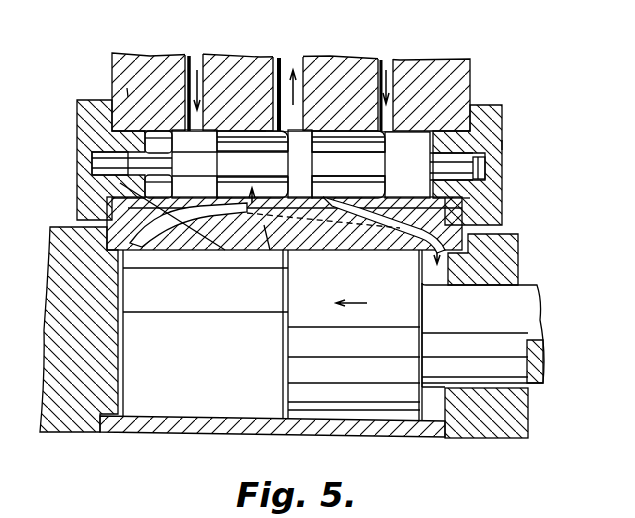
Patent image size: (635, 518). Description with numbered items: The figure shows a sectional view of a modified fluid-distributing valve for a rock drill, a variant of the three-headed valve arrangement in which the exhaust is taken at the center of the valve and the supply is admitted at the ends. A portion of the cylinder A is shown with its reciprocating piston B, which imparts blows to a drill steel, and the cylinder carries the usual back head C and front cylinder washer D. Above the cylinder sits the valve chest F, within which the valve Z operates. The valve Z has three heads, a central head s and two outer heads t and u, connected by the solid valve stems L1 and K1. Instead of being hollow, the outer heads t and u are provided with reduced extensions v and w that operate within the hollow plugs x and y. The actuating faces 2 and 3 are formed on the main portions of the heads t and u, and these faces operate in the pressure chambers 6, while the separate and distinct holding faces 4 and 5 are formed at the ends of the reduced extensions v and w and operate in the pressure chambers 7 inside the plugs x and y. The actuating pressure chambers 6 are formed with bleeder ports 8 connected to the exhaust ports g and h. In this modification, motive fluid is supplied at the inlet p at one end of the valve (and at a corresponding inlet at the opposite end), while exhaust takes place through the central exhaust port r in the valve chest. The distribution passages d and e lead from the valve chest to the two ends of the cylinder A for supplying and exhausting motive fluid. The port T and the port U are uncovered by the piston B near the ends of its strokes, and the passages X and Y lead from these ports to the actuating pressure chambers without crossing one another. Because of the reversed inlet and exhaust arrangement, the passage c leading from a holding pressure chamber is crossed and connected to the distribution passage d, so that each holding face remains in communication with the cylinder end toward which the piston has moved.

The valve chest F is at (430, 72).
The inlet port p is at (198, 67).
The exhaust port r is at (300, 67).
The exhaust port g is at (384, 67).
The valve Z is at (258, 125).
The actuating face 2 is at (163, 133).
The hollow plug x is at (100, 163).
The reduced extension v is at (143, 152).
The holding face 4 is at (147, 188).
The outer head t is at (183, 143).
The valve stem K1 is at (250, 160).
The central head s is at (318, 135).
The valve stem L1 is at (347, 160).
The outer head u is at (440, 132).
The reduced extension w is at (495, 140).
The pressure chamber 7 is at (147, 172).
The holding face 5 is at (487, 165).
The actuating face 3 is at (442, 147).
The hollow plug y is at (502, 143).
The bleeder port 8 is at (127, 88).
The pressure chamber 6 is at (143, 182).
The passage Y is at (210, 220).
The distribution passage d is at (158, 232).
The port T is at (357, 227).
The passage X is at (403, 227).
The port U is at (227, 250).
The exhaust port h is at (270, 250).
The back head C is at (72, 418).
The cylinder A is at (403, 439).
The front cylinder washer D is at (502, 427).
The piston B is at (303, 387).
The passage c is at (322, 250).
The distribution passage e is at (417, 253).